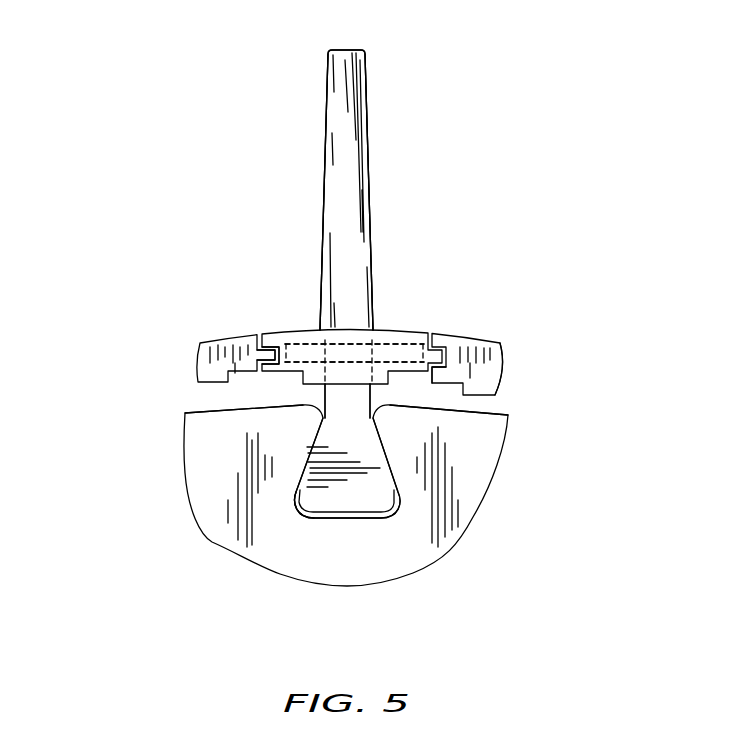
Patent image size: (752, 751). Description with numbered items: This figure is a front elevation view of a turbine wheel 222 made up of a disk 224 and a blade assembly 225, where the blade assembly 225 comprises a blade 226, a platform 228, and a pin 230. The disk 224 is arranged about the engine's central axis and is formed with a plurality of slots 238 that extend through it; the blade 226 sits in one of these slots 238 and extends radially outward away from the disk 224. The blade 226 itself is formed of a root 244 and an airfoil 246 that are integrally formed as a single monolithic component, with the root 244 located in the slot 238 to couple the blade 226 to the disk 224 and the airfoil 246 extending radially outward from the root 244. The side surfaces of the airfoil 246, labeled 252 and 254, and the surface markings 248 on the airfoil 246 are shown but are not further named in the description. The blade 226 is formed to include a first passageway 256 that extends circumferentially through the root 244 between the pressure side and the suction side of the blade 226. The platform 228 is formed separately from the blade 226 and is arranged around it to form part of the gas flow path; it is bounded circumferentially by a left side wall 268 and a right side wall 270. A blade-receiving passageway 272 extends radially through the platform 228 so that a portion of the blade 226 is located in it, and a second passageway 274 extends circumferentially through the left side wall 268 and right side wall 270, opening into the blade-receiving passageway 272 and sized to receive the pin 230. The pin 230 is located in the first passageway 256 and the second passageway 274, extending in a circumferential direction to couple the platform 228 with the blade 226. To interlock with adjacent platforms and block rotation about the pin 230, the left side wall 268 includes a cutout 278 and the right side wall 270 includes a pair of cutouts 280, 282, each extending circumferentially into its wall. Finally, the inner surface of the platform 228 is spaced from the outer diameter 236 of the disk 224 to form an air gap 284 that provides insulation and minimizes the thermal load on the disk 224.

The turbine wheel 222 is at (148, 128).
The disk 224 is at (210, 492).
The blade assembly 225 is at (446, 237).
The blade 226 is at (312, 150).
The platform 228 is at (400, 325).
The pin 230 is at (390, 377).
The outer diameter 236 is at (490, 417).
The slot 238 is at (396, 526).
The root 244 is at (312, 503).
The airfoil 246 is at (376, 208).
The surface grooves 248 is at (350, 110).
The right side surface 252 is at (372, 158).
The left side surface 254 is at (323, 188).
The first passageway 256 is at (360, 355).
The left side wall 268 is at (260, 357).
The right side wall 270 is at (498, 372).
The blade-receiving passageway 272 is at (360, 371).
The second passageway 274 is at (300, 352).
The cutout 278 is at (258, 372).
The cutout 280 is at (447, 342).
The cutout 282 is at (435, 379).
The air gap 284 is at (202, 411).